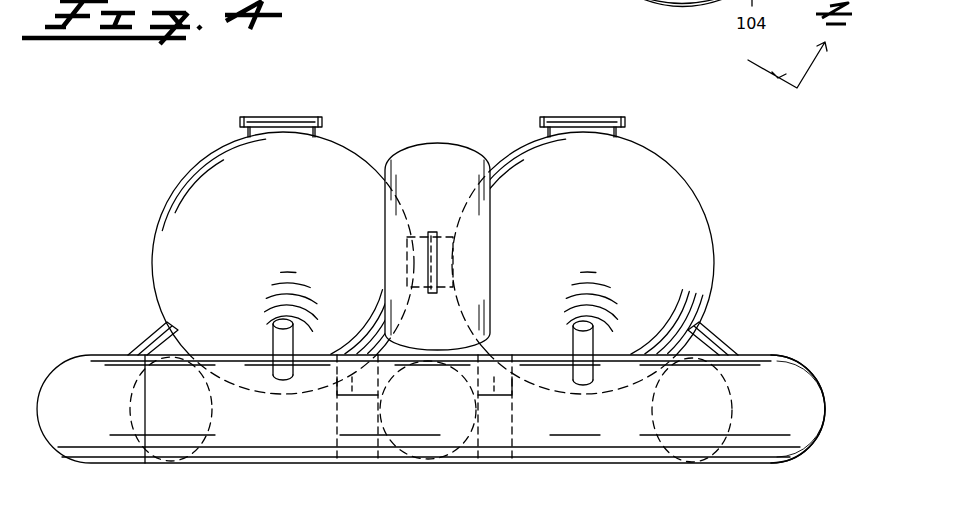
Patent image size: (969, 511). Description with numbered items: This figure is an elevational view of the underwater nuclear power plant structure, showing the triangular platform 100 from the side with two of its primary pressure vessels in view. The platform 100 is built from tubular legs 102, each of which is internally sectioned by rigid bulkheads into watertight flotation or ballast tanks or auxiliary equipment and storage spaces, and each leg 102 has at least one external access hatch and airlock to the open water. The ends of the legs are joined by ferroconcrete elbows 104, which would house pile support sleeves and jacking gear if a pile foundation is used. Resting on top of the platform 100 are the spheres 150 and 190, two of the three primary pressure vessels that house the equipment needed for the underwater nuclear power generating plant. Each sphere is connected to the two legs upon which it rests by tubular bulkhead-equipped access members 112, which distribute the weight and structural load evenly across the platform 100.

The platform 100 is at (66, 374).
The tubular leg 102 is at (492, 447).
The ferroconcrete elbow 104 is at (803, 432).
The access member 112 is at (152, 335).
The sphere 150 is at (210, 172).
The sphere 190 is at (686, 236).